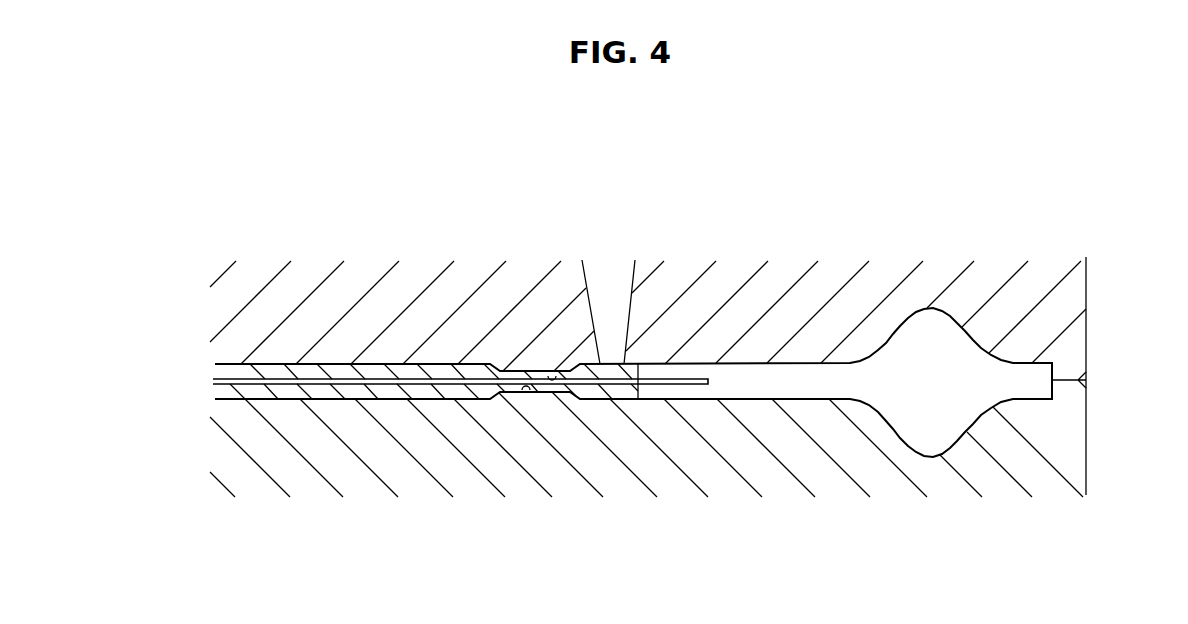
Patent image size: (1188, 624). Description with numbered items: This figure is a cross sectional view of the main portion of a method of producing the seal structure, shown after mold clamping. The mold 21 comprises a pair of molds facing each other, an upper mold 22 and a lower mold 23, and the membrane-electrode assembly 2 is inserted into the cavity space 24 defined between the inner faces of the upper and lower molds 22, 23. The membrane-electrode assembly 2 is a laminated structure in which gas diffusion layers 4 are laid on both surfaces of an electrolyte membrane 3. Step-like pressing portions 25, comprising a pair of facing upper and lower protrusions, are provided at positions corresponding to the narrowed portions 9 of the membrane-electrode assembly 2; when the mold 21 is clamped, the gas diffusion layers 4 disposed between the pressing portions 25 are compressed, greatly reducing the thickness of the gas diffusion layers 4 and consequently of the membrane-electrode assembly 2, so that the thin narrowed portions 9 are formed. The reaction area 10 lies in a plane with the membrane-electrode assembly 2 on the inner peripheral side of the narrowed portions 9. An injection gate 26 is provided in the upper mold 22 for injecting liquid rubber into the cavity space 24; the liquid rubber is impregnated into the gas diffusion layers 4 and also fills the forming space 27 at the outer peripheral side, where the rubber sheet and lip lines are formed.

The membrane-electrode assembly 2 is at (229, 361).
The electrolyte membrane 3 is at (215, 383).
The gas diffusion layer 4 is at (213, 368).
The GDL narrowed portion 9 is at (515, 372).
The reaction area 10 is at (357, 367).
The mold 21 is at (936, 243).
The upper mold 22 is at (1068, 305).
The lower mold 23 is at (1068, 460).
The cavity space 24 is at (775, 382).
The pressing portion 25 is at (540, 372).
The injection gate 26 is at (610, 292).
The forming space 27 is at (928, 410).